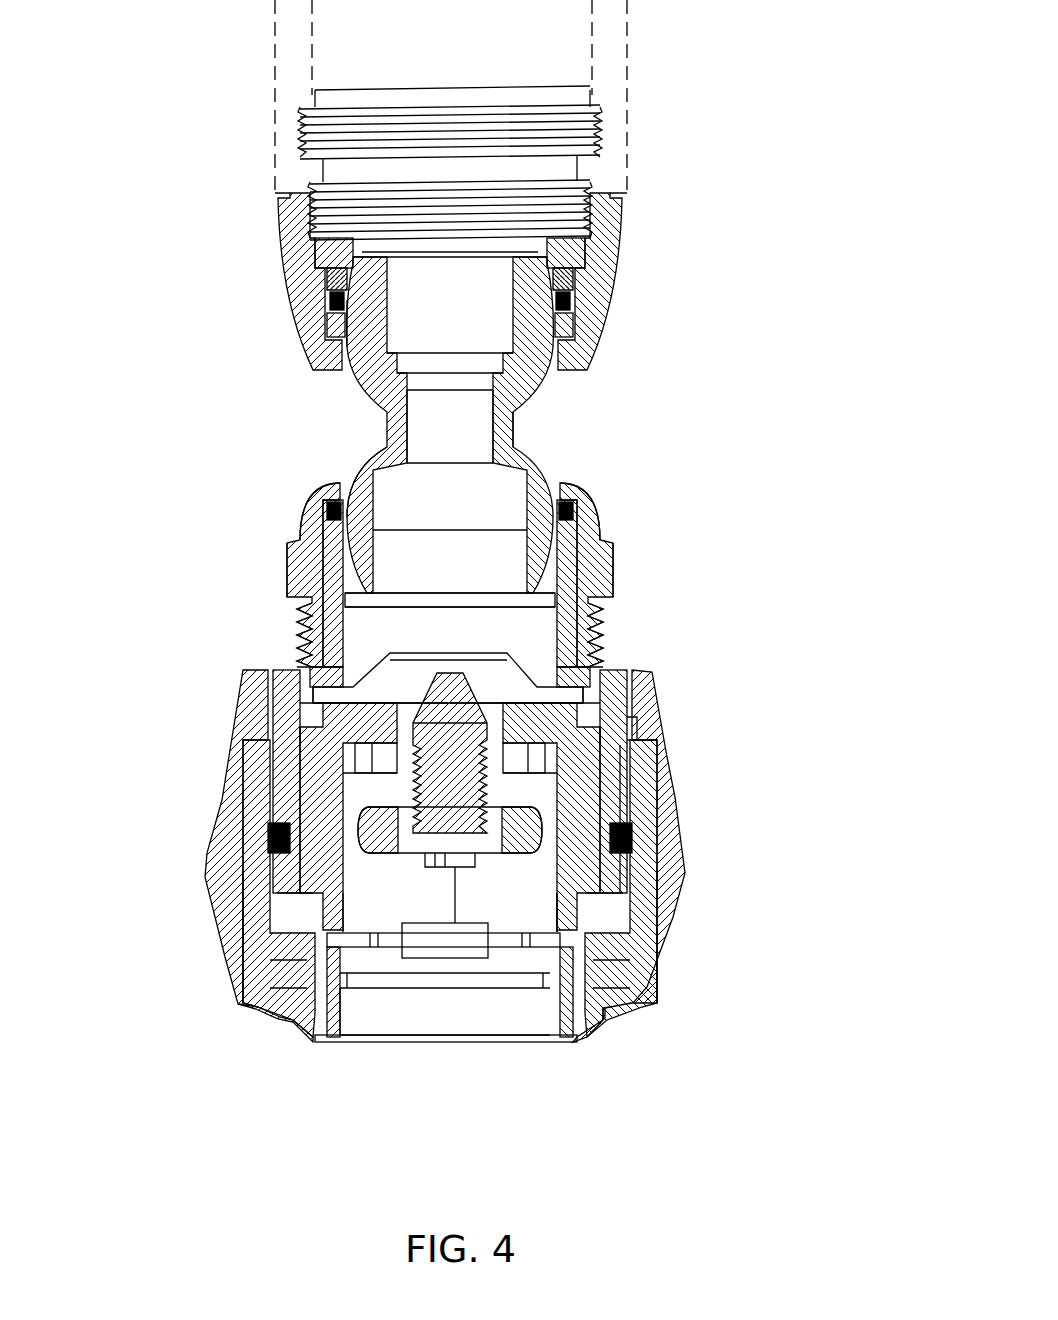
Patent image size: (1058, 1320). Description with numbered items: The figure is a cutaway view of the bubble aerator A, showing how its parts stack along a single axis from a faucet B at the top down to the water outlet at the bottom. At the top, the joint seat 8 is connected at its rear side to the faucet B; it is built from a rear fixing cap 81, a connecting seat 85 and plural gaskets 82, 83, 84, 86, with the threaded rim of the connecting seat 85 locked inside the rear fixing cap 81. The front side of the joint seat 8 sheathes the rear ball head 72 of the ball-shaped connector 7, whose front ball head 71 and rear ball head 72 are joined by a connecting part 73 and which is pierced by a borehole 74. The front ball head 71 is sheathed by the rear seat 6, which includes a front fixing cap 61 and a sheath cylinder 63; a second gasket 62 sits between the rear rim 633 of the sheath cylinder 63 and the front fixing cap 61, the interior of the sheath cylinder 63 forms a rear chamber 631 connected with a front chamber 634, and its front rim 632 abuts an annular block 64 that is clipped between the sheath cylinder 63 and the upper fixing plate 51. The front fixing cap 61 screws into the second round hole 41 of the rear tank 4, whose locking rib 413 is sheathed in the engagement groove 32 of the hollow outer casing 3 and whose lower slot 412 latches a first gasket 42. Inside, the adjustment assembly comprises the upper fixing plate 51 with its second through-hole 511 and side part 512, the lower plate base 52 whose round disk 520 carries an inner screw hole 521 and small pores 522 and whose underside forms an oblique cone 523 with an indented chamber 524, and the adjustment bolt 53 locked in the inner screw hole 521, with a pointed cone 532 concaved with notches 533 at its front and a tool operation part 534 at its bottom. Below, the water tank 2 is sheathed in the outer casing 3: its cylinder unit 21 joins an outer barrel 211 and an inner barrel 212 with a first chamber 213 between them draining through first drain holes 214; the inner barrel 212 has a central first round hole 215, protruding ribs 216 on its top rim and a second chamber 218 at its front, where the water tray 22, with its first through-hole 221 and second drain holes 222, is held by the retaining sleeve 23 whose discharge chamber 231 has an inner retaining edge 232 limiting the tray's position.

The faucet B is at (268, 95).
The bubble aerator A is at (713, 447).
The joint seat 8 is at (738, 57).
The rear fixing cap 81 is at (617, 262).
The gasket 82 is at (572, 325).
The gasket 83 is at (578, 282).
The gasket 84 is at (598, 250).
The connecting seat 85 is at (600, 150).
The gasket 86 is at (590, 95).
The ball-shaped connector 7 is at (538, 393).
The front ball head 71 is at (380, 485).
The rear ball head 72 is at (352, 318).
The connecting part 73 is at (520, 440).
The borehole 74 is at (423, 427).
The rear seat 6 is at (605, 518).
The front fixing cap 61 is at (605, 560).
The second gasket 62 is at (598, 500).
The sheath cylinder 63 is at (430, 622).
The rear chamber 631 is at (425, 615).
The front rim 632 is at (305, 630).
The rear rim 633 is at (565, 530).
The front chamber 634 is at (575, 640).
The annular block 64 is at (310, 660).
The rear tank 4 is at (605, 685).
The second round hole 41 is at (300, 868).
The slot 412 is at (633, 838).
The locking rib 413 is at (643, 725).
The first gasket 42 is at (652, 868).
The upper fixing plate 51 is at (600, 660).
The second through-hole 511 is at (375, 635).
The side part 512 is at (330, 680).
The lower plate base 52 is at (450, 816).
The round disk 520 is at (355, 695).
The inner screw hole 521 is at (575, 778).
The small pores 522 is at (360, 732).
The oblique cone 523 is at (360, 812).
The indented chamber 524 is at (403, 845).
The adjustment bolt 53 is at (640, 800).
The pointed cone 532 is at (548, 598).
The notches 533 is at (590, 705).
The tool operation part 534 is at (457, 862).
The outer casing 3 is at (667, 818).
The engagement groove 32 is at (650, 742).
The water tank 2 is at (793, 925).
The cylinder unit 21 is at (638, 900).
The outer barrel 211 is at (247, 1000).
The inner barrel 212 is at (270, 967).
The first chamber 213 is at (320, 902).
The first drain holes 214 is at (597, 1017).
The first round hole 215 is at (335, 800).
The protruding ribs 216 is at (345, 785).
The second chamber 218 is at (457, 883).
The water tray 22 is at (615, 943).
The first through-hole 221 is at (457, 950).
The second drain holes 222 is at (380, 1038).
The retaining sleeve 23 is at (575, 975).
The discharge chamber 231 is at (422, 1040).
The inner retaining edge 232 is at (345, 1040).